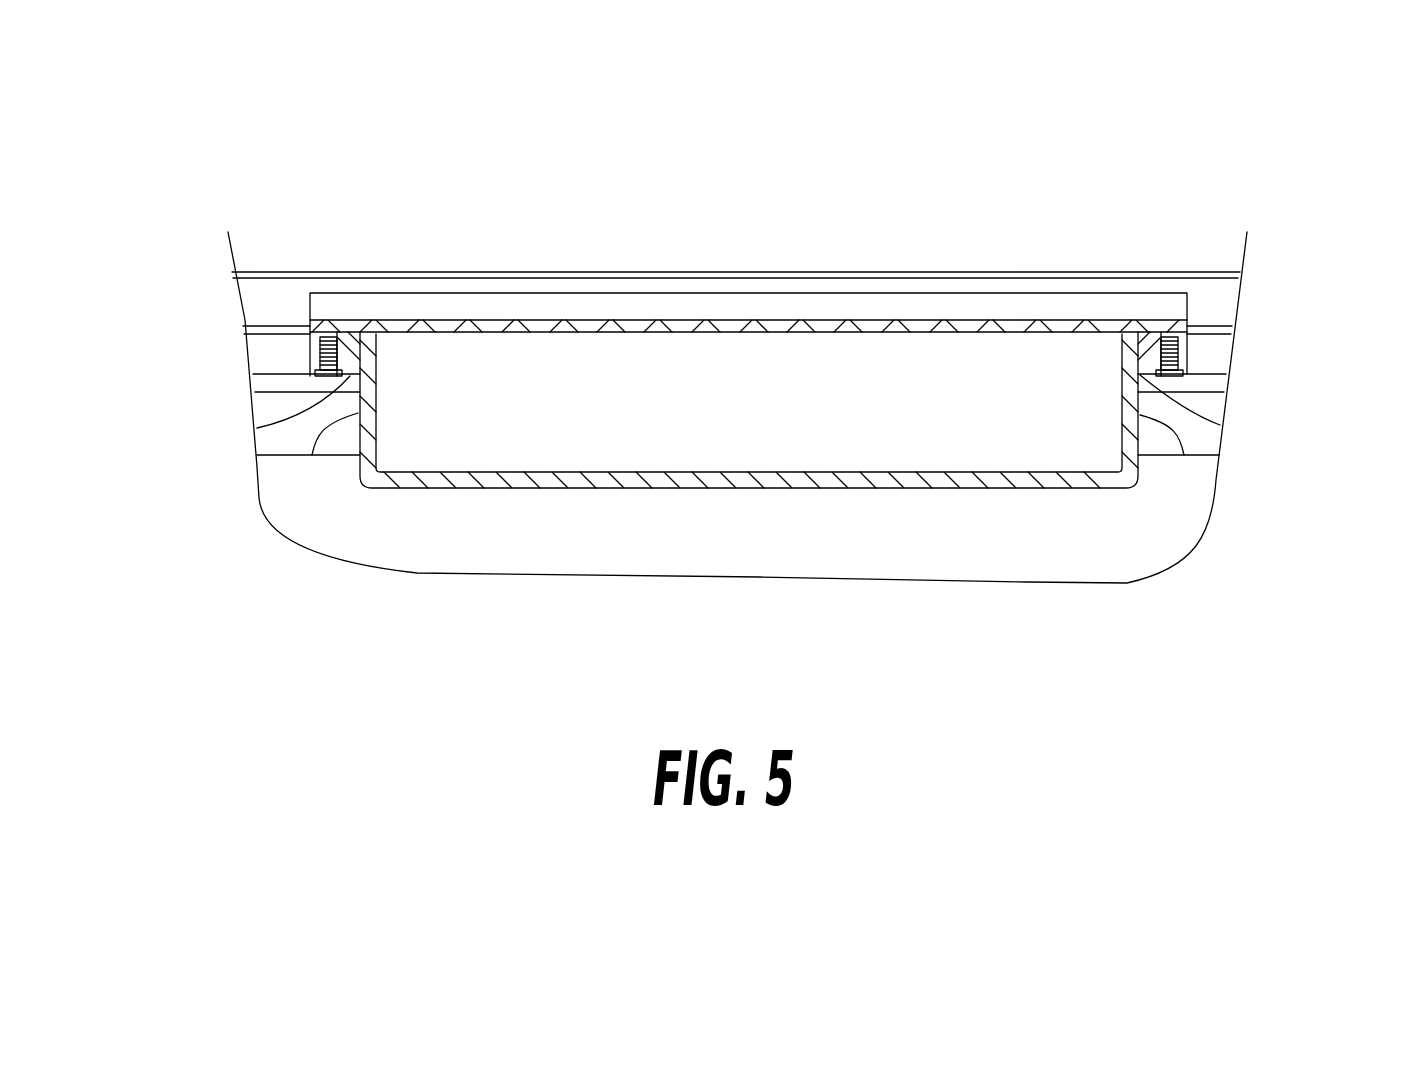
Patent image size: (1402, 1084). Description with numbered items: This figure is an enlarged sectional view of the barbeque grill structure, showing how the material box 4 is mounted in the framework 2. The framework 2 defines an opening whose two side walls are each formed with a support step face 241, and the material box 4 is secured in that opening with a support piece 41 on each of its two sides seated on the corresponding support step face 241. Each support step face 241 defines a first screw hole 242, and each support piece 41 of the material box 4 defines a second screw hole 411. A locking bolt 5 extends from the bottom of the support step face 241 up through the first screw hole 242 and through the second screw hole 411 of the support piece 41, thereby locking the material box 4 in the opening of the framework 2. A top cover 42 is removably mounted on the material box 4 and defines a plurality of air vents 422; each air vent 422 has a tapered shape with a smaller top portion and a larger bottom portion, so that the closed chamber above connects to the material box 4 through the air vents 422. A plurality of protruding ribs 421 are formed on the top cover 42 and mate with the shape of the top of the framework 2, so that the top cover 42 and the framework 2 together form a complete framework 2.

The framework 2 is at (291, 295).
The material box 4 is at (808, 480).
The locking bolt 5 is at (743, 243).
The support piece 41 is at (359, 352).
The top cover 42 is at (748, 243).
The protruding ribs 421 is at (920, 322).
The air vents 422 is at (656, 322).
The second screw hole 411 is at (318, 357).
The support step face 241 is at (257, 428).
The first screw hole 242 is at (255, 382).